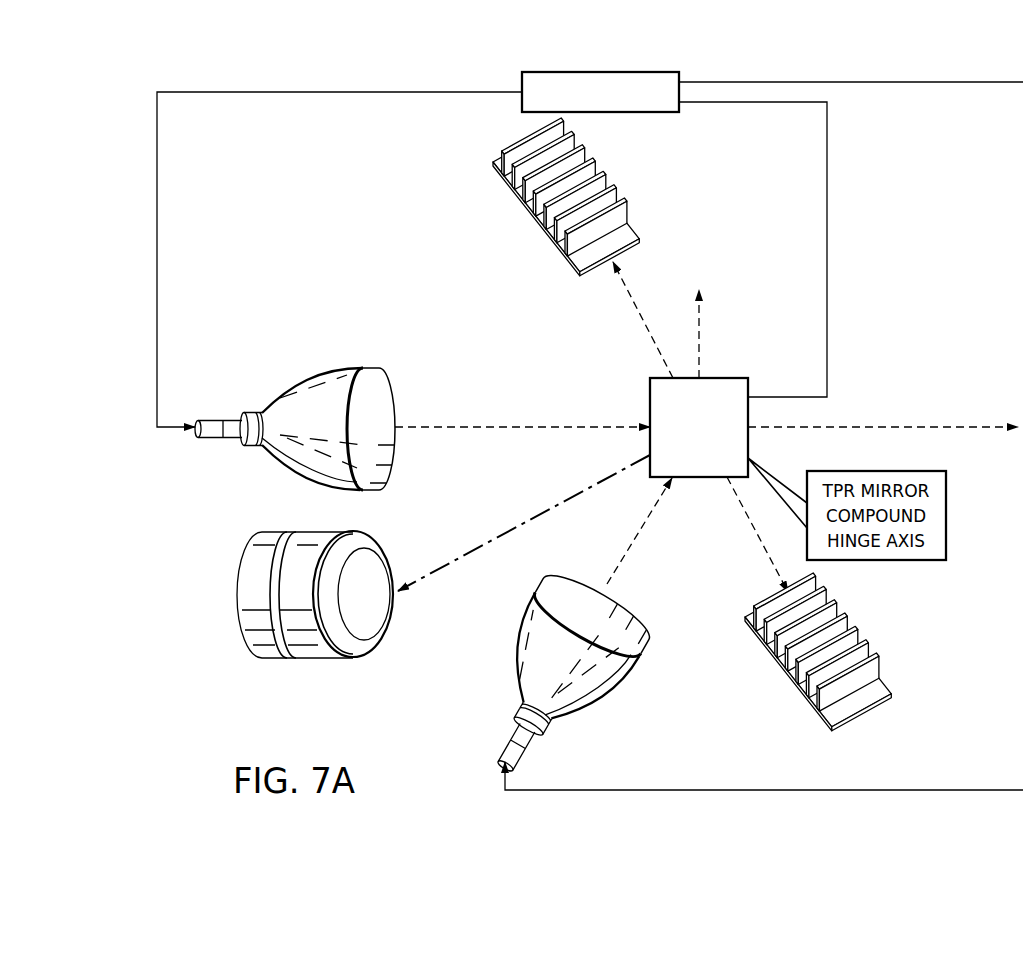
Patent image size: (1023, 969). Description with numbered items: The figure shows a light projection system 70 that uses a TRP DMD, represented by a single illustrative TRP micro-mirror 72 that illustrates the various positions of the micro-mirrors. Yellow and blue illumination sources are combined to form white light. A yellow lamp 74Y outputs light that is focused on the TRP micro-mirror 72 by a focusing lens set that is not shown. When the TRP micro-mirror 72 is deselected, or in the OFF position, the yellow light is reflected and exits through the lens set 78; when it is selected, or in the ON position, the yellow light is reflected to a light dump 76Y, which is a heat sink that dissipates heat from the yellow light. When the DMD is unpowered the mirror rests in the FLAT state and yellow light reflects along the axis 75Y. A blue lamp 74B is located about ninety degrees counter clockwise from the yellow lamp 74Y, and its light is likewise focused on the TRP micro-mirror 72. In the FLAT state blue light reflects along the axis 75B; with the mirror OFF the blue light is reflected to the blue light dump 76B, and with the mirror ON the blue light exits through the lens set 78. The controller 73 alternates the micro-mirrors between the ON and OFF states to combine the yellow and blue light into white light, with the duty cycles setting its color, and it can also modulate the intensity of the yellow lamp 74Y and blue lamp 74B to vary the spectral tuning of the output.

The light projection system 70 is at (284, 71).
The controller 73 is at (600, 72).
The TRP micro-mirror 72 is at (685, 443).
The yellow lamp 74Y is at (296, 386).
The blue lamp 74B is at (604, 706).
The axis 75B is at (700, 332).
The axis 75Y is at (858, 427).
The blue light dump 76B is at (534, 224).
The light dump 76Y is at (876, 705).
The lens set 78 is at (284, 660).